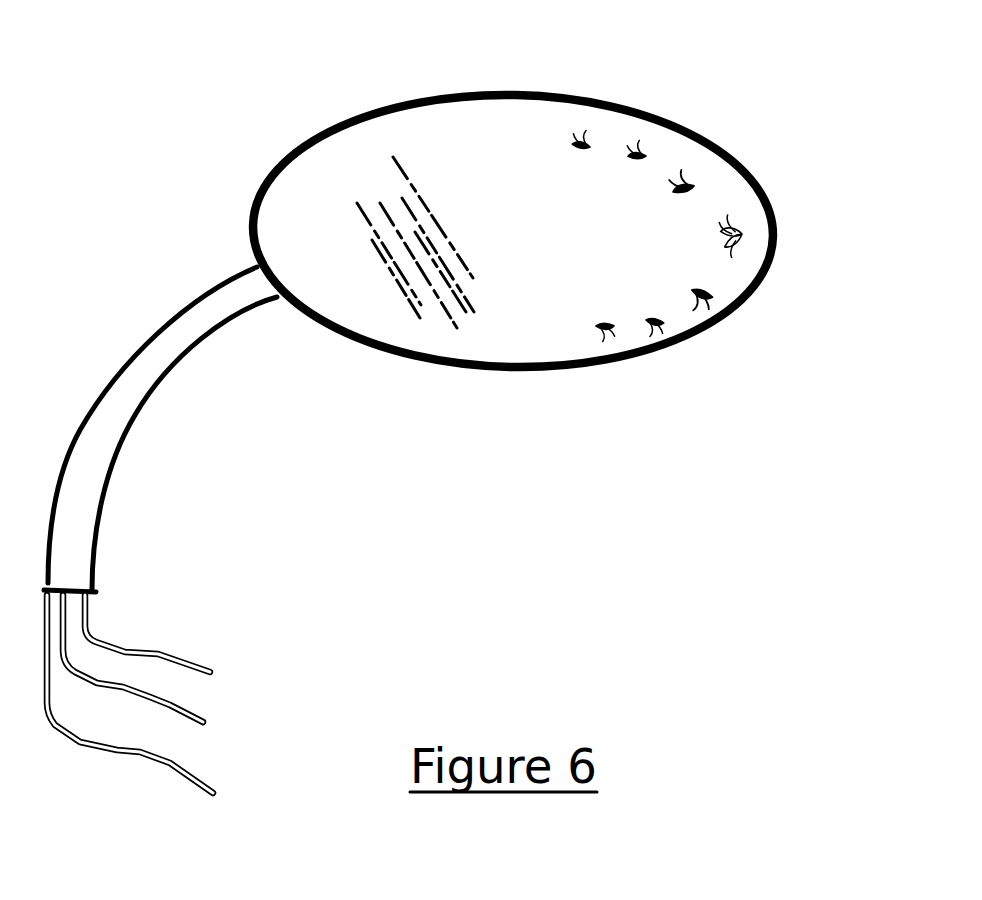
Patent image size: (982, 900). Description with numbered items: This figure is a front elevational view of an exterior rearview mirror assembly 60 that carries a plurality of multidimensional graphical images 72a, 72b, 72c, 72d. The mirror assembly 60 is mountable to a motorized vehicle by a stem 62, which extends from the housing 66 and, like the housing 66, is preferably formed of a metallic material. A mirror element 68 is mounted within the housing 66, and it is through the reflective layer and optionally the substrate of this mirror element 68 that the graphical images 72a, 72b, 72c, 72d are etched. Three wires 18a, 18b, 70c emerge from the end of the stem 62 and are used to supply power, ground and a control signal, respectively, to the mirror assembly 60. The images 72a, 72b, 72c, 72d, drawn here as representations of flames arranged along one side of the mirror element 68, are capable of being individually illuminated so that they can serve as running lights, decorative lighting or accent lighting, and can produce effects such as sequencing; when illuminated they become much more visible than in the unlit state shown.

The exterior rearview mirror assembly 60 is at (218, 118).
The housing 66 is at (397, 103).
The mirror element 68 is at (527, 322).
The stem 62 is at (140, 417).
The wire 18a is at (207, 663).
The wire 18b is at (207, 718).
The wire 70c is at (168, 770).
The multidimensional graphical image 72a is at (744, 237).
The multidimensional graphical image 72b is at (692, 184).
The multidimensional graphical image 72c is at (647, 156).
The multidimensional graphical image 72d is at (592, 144).